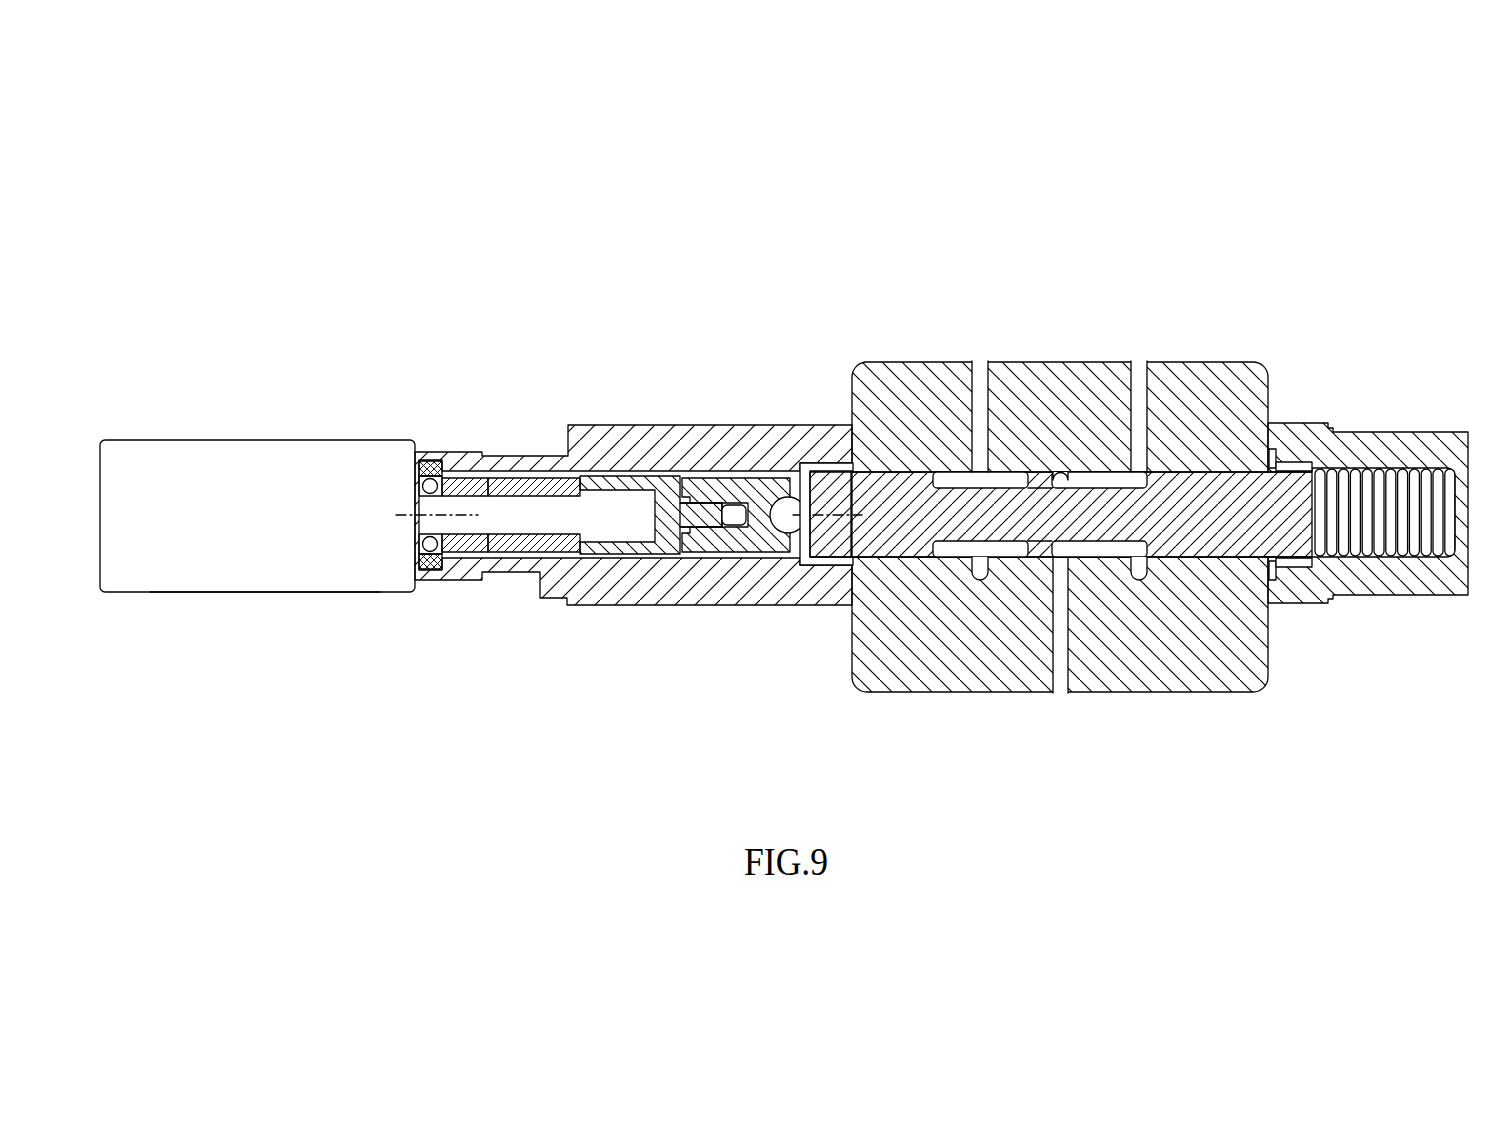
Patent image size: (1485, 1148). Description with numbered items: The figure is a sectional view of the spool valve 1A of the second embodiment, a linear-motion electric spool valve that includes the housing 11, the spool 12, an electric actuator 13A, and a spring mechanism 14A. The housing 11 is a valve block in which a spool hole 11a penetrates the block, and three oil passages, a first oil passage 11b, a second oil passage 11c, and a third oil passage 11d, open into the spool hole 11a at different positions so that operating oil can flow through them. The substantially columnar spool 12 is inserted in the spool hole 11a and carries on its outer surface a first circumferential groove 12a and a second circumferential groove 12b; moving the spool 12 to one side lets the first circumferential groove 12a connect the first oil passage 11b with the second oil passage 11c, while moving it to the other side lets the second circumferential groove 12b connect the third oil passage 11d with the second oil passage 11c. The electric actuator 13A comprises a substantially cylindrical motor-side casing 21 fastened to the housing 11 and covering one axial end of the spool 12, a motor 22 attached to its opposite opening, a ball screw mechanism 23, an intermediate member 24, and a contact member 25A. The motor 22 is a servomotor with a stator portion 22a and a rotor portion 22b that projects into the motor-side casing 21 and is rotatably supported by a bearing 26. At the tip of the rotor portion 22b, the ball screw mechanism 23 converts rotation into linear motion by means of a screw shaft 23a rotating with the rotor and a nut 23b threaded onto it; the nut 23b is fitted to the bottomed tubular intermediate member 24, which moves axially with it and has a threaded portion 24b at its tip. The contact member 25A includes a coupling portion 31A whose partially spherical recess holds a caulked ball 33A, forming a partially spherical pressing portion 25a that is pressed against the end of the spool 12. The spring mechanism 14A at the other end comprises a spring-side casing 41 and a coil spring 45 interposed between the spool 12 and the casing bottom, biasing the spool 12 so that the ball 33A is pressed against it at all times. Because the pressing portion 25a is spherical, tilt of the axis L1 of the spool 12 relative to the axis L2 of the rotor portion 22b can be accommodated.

The spool valve 1A is at (1355, 201).
The housing 11 is at (1205, 362).
The spool hole 11a is at (1188, 548).
The first oil passage 11b is at (981, 362).
The second oil passage 11c is at (1062, 692).
The third oil passage 11d is at (1139, 362).
The spool 12 is at (1040, 478).
The first circumferential groove 12a is at (1028, 548).
The second circumferential groove 12b is at (1074, 532).
The electric actuator 13A is at (298, 343).
The spring mechanism 14A is at (1402, 314).
The motor-side casing 21 is at (647, 447).
The motor 22 is at (368, 608).
The stator portion 22a is at (275, 578).
The rotor portion 22b is at (436, 461).
The ball screw mechanism 23 is at (448, 656).
The screw shaft 23a is at (463, 560).
The nut 23b is at (520, 558).
The intermediate member 24 is at (640, 552).
The threaded portion 24b is at (712, 530).
The contact member 25A is at (693, 378).
The pressing portion 25a is at (803, 470).
The bearing 26 is at (436, 572).
The coupling portion 31A is at (755, 490).
The ball 33A is at (777, 498).
The spring-side casing 41 is at (1352, 445).
The coil spring 45 is at (1388, 470).
The axis of the spool L1 is at (806, 568).
The axis of the rotor portion L2 is at (403, 514).